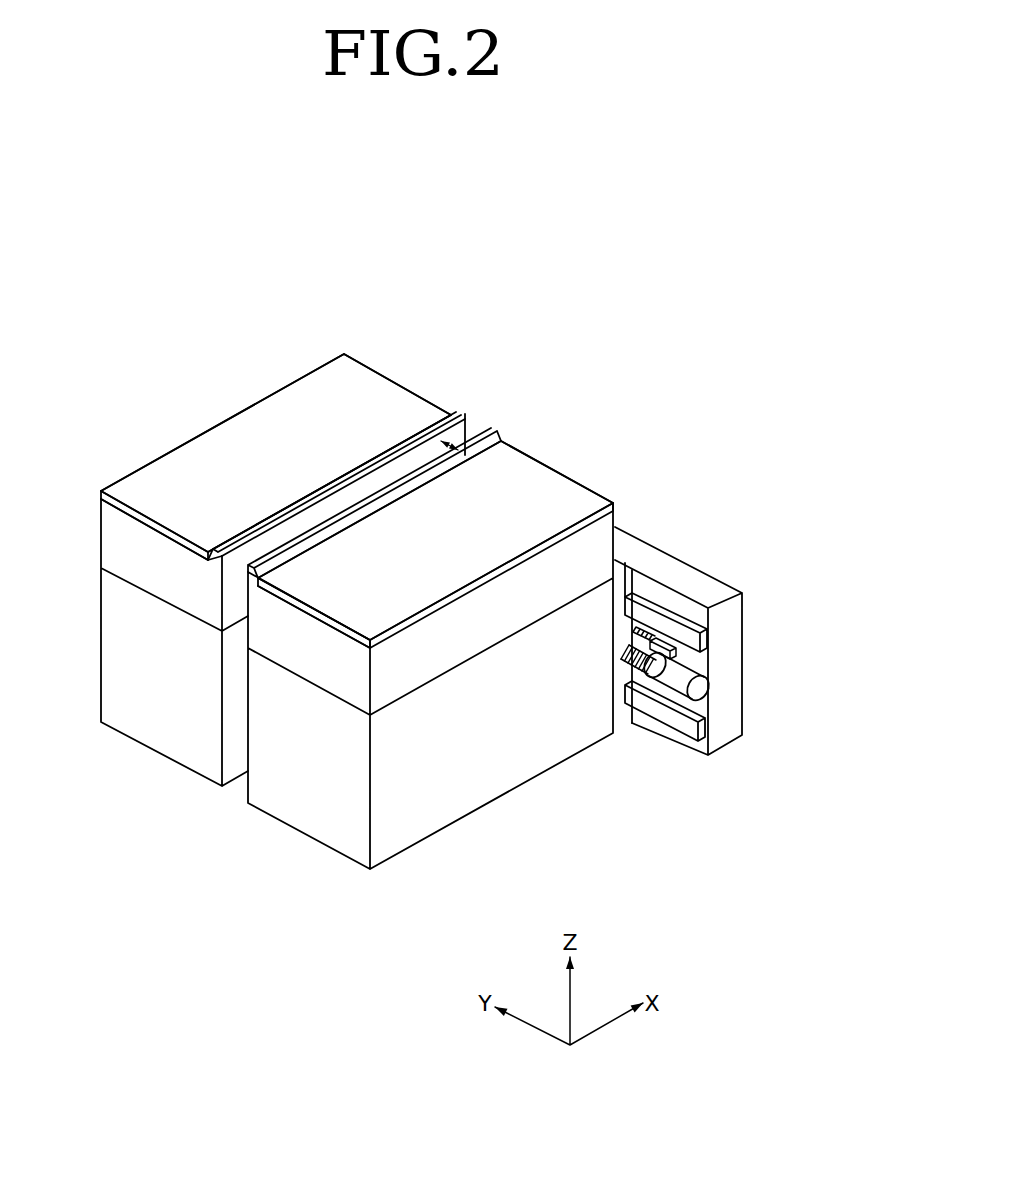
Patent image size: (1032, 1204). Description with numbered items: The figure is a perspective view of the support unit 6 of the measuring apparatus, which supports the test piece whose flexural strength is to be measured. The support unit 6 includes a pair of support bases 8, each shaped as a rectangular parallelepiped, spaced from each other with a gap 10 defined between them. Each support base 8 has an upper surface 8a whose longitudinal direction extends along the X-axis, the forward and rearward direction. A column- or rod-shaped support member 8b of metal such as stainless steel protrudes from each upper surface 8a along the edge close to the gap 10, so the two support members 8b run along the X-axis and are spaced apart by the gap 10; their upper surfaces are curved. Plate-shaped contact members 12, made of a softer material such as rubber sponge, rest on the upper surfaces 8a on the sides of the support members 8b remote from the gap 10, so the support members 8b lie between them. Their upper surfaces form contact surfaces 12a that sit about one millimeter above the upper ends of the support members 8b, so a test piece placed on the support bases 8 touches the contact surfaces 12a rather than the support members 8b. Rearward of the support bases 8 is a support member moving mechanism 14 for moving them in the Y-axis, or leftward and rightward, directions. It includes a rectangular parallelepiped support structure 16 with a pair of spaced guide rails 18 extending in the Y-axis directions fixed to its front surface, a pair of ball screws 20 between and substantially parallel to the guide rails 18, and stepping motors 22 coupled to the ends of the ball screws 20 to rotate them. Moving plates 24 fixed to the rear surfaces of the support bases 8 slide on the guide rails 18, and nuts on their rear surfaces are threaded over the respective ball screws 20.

The support unit 6 is at (207, 347).
The support base 8 is at (163, 738).
The upper surface 8a is at (134, 516).
The support member 8b is at (308, 537).
The gap 10 is at (465, 433).
The contact member 12 is at (383, 374).
The contact surface 12a is at (310, 387).
The support member moving mechanism 14 is at (694, 622).
The support structure 16 is at (700, 583).
The guide rail 18 is at (706, 640).
The ball screw 20 is at (632, 636).
The stepping motor 22 is at (702, 694).
The moving plate 24 is at (623, 578).